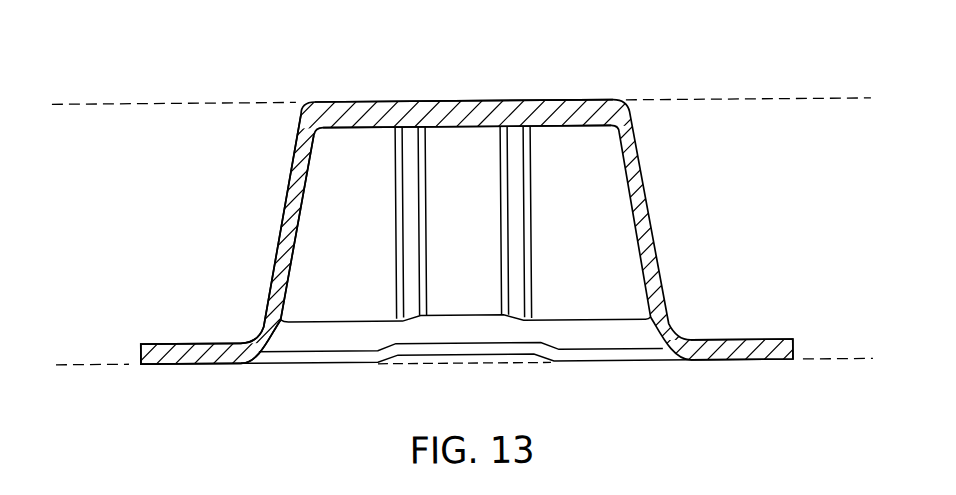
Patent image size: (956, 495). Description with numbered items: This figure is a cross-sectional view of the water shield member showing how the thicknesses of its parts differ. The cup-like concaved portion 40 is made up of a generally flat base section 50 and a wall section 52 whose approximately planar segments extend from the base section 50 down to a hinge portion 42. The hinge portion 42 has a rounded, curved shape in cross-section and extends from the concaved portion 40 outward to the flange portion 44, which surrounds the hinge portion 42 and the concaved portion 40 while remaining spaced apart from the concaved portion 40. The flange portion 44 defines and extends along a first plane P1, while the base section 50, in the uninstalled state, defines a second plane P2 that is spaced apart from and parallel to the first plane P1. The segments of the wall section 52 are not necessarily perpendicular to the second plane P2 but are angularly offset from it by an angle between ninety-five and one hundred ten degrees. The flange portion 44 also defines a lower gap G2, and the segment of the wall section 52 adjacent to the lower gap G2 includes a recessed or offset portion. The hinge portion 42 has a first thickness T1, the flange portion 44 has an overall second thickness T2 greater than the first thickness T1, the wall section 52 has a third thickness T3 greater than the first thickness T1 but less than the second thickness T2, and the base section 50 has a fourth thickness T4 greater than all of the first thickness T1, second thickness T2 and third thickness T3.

The concaved portion 40 is at (360, 101).
The hinge portion 42 is at (255, 342).
The flange portion 44 is at (185, 350).
The base section 50 is at (403, 118).
The wall section 52 is at (293, 195).
The first thickness T1 is at (662, 345).
The second thickness T2 is at (750, 362).
The third thickness T3 is at (635, 230).
The fourth thickness T4 is at (463, 126).
The lower gap G2 is at (458, 354).
The first plane P1 is at (90, 362).
The second plane P2 is at (95, 98).